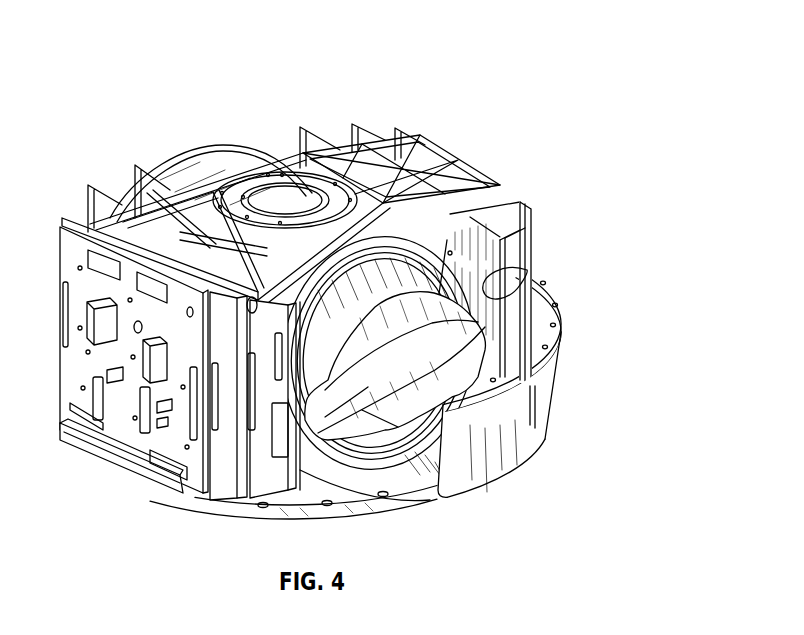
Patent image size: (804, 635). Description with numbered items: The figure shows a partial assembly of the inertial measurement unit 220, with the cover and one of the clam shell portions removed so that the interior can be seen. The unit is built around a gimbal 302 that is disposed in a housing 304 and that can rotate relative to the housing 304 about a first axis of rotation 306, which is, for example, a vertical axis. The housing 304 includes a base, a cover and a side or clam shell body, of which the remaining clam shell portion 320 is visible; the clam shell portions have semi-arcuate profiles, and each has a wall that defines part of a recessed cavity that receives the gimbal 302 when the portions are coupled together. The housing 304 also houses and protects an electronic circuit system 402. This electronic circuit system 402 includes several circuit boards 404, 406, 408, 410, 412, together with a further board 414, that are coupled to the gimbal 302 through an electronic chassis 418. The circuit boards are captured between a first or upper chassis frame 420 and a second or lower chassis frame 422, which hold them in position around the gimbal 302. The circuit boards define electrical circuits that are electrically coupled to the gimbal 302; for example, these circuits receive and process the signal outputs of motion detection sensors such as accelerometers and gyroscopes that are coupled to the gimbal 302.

The inertial measurement unit 220 is at (540, 70).
The electronic circuit system 402 is at (465, 133).
The electronic chassis 418 is at (343, 158).
The first or upper chassis frame 420 is at (170, 233).
The side plate 414 is at (512, 200).
The circuit board 412 is at (530, 270).
The circuit board 410 is at (498, 305).
The housing 304 is at (624, 300).
The gimbal 302 is at (522, 350).
The clam shell portion 320 is at (528, 398).
The first axis of rotation 306 is at (350, 520).
The circuit board 404 is at (200, 500).
The circuit board 406 is at (262, 476).
The circuit board 408 is at (287, 481).
The second or lower chassis frame 422 is at (90, 457).